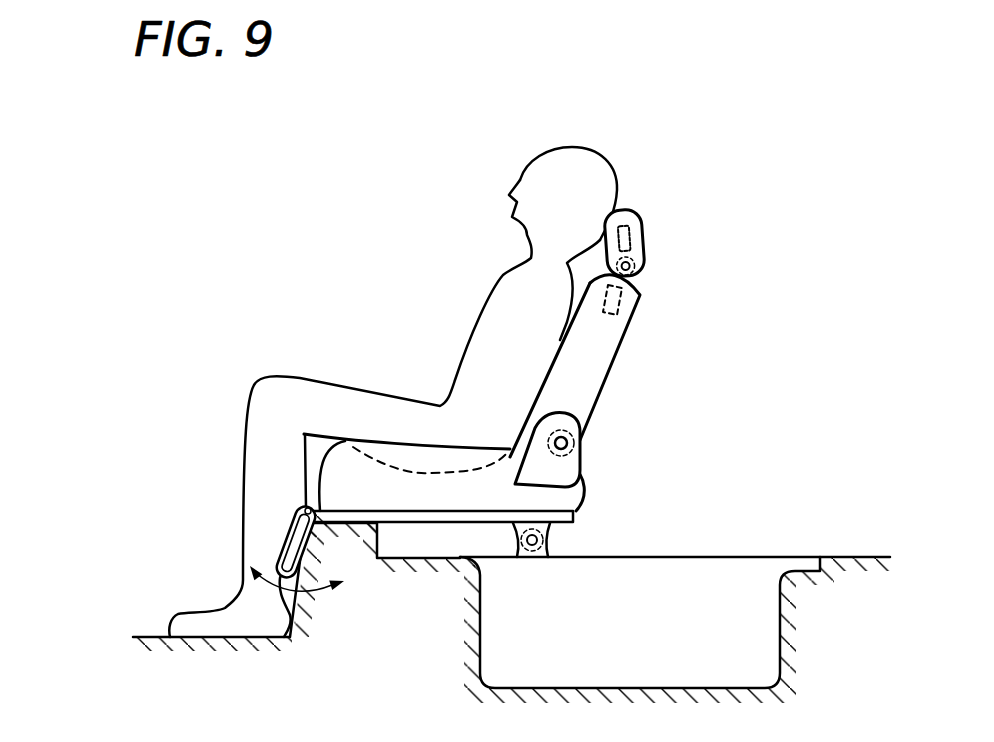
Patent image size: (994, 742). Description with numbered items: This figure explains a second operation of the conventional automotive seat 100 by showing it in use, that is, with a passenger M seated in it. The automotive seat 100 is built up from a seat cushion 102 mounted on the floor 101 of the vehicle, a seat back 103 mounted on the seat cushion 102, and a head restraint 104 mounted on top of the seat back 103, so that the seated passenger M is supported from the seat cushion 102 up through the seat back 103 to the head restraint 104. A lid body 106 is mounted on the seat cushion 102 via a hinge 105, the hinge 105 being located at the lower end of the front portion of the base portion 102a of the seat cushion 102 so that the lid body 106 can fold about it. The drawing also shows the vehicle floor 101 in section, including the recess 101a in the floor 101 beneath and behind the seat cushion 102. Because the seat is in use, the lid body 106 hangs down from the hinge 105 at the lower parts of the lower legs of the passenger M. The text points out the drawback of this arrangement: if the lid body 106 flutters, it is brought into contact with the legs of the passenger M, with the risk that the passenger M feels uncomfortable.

The automotive seat 100 is at (247, 188).
The floor 101 is at (138, 621).
The floor recess 101a is at (623, 687).
The seat cushion 102 is at (400, 437).
The base portion 102a is at (573, 518).
The seat back 103 is at (618, 376).
The head restraint 104 is at (647, 240).
The hinge 105 is at (297, 510).
The lid body 106 is at (268, 542).
The passenger M is at (320, 377).